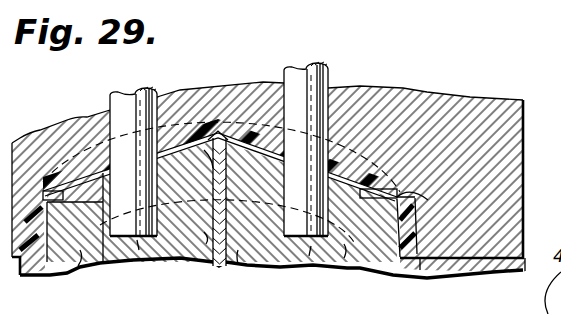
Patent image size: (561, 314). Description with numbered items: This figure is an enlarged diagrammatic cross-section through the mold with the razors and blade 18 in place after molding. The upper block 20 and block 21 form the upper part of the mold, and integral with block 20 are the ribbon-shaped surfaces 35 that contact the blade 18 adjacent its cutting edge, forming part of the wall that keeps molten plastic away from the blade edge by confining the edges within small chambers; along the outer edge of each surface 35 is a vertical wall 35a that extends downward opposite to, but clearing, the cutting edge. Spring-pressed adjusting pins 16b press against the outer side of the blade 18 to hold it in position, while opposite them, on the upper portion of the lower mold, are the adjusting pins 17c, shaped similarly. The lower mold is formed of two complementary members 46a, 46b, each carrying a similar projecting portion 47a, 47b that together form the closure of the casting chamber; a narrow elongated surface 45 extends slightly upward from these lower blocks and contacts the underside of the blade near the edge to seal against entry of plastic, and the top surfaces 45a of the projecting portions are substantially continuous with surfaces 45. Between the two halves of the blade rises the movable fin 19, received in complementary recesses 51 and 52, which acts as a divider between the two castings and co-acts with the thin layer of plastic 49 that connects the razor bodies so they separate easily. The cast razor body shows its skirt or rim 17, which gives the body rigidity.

The adjusting pin 16b is at (128, 95).
The skirt or rim 17 is at (44, 266).
The adjusting pin 17c is at (137, 240).
The blade 18 is at (125, 172).
The movable fin 19 is at (219, 264).
The block 20 is at (470, 116).
The block 21 is at (450, 276).
The ribbon-shaped surface 35 is at (43, 158).
The vertical wall 35a is at (418, 197).
The elongated surface 45 is at (60, 203).
The top surface 45a is at (47, 212).
The lower mold member 46a is at (78, 266).
The lower mold member 46b is at (344, 258).
The projecting portion 47a is at (92, 252).
The projecting portion 47b is at (253, 246).
The thin layer of plastic 49 is at (218, 133).
The recess 51 is at (206, 244).
The recess 52 is at (238, 264).